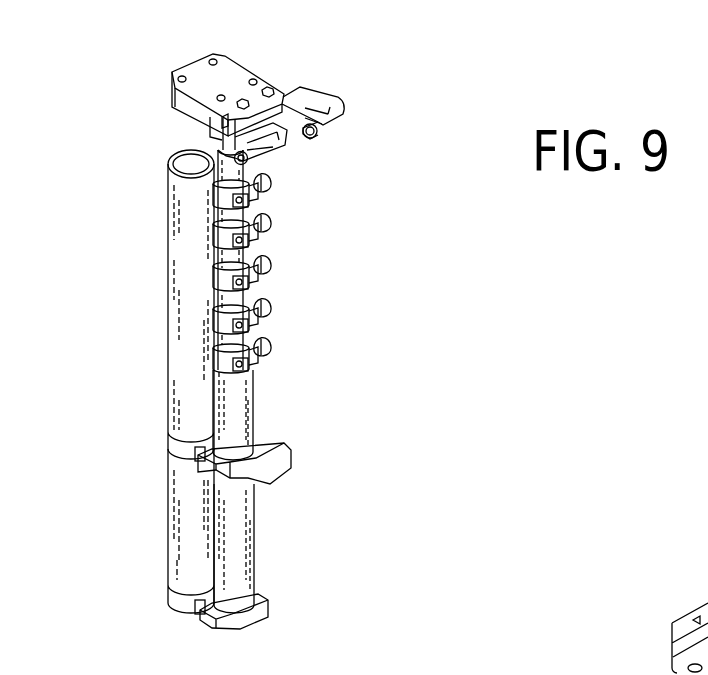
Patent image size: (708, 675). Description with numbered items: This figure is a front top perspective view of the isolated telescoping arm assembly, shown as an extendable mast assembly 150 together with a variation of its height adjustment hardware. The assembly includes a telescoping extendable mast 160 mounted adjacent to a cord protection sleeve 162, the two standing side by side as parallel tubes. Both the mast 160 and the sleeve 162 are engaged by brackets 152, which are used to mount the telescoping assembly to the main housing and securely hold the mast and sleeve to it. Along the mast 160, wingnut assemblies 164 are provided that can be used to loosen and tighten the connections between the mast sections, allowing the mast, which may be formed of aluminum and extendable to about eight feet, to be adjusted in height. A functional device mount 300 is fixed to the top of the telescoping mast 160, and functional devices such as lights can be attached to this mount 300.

The extendable mast assembly 150 is at (292, 406).
The brackets 152 is at (290, 462).
The extendable mast 160 is at (251, 296).
The cord protection sleeve 162 is at (167, 390).
The wingnut assemblies 164 is at (273, 223).
The functional device mount 300 is at (235, 57).